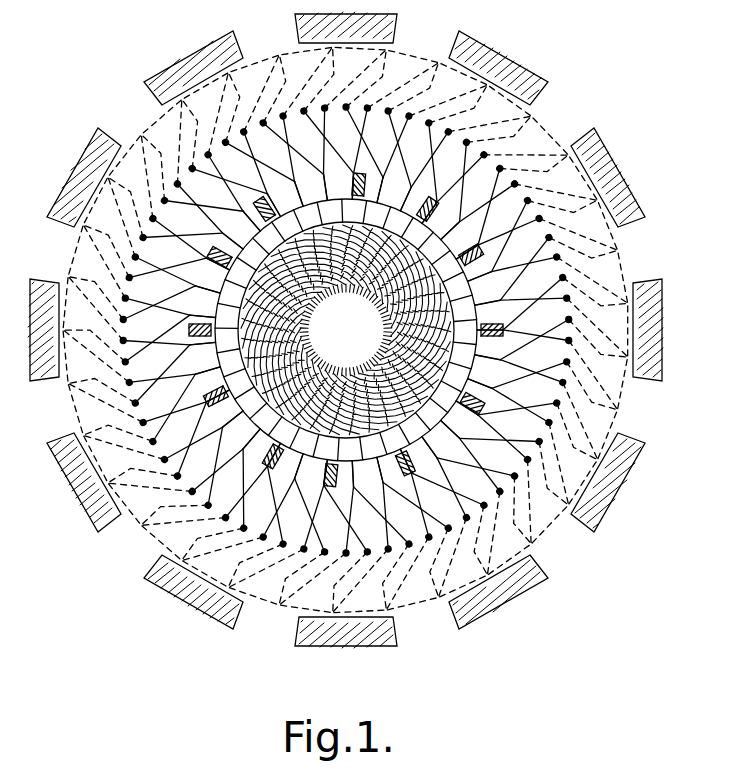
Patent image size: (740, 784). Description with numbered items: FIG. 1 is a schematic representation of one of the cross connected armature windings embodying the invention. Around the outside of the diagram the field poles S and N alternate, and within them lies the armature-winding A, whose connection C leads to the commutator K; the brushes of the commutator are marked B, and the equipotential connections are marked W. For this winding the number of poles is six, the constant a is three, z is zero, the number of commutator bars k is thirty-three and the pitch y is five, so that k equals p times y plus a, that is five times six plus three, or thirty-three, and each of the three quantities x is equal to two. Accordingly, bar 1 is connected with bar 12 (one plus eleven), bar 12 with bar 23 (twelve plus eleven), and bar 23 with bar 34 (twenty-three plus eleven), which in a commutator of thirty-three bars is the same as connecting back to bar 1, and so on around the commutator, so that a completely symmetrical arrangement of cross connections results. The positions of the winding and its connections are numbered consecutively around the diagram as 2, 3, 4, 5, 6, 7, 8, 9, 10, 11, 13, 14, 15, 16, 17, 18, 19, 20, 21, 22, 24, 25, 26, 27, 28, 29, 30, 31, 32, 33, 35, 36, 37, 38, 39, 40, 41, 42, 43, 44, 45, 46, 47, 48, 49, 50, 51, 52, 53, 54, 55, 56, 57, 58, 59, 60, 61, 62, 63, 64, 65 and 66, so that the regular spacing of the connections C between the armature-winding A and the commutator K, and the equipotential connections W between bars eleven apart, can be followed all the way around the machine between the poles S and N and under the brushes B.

The commutator bar 1 is at (141, 310).
The winding terminal 2 is at (144, 275).
The winding terminal 3 is at (149, 272).
The winding terminal 4 is at (158, 238).
The winding terminal 5 is at (164, 235).
The winding terminal 6 is at (179, 205).
The winding terminal 7 is at (185, 203).
The winding terminal 8 is at (206, 175).
The winding terminal 9 is at (212, 175).
The winding terminal 10 is at (238, 151).
The winding terminal 11 is at (243, 152).
The commutator bar 12 is at (273, 134).
The winding terminal 13 is at (279, 136).
The winding terminal 14 is at (312, 124).
The winding terminal 15 is at (317, 126).
The winding terminal 16 is at (351, 121).
The winding terminal 17 is at (356, 125).
The winding terminal 18 is at (388, 126).
The winding terminal 19 is at (395, 131).
The winding terminal 20 is at (428, 138).
The winding terminal 21 is at (432, 143).
The winding terminal 22 is at (463, 157).
The commutator bar 23 is at (465, 163).
The winding terminal 24 is at (493, 183).
The winding terminal 25 is at (494, 188).
The winding terminal 26 is at (519, 213).
The winding terminal 27 is at (519, 219).
The winding terminal 28 is at (538, 248).
The winding terminal 29 is at (537, 254).
The winding terminal 30 is at (550, 286).
The winding terminal 31 is at (547, 291).
The winding terminal 32 is at (554, 325).
The winding terminal 33 is at (550, 330).
The commutator bar 34 is at (551, 364).
The winding terminal 35 is at (547, 369).
The winding terminal 36 is at (541, 403).
The winding terminal 37 is at (537, 406).
The winding terminal 38 is at (524, 439).
The winding terminal 39 is at (518, 440).
The winding terminal 40 is at (500, 470).
The winding terminal 41 is at (494, 472).
The winding terminal 42 is at (471, 497).
The winding terminal 43 is at (464, 498).
The winding terminal 44 is at (437, 517).
The winding terminal 45 is at (431, 516).
The winding terminal 46 is at (399, 532).
The winding terminal 47 is at (394, 529).
The winding terminal 48 is at (360, 538).
The winding terminal 49 is at (355, 535).
The winding terminal 50 is at (321, 536).
The winding terminal 51 is at (316, 533).
The winding terminal 52 is at (282, 528).
The winding terminal 53 is at (279, 524).
The winding terminal 54 is at (245, 513).
The winding terminal 55 is at (243, 507).
The winding terminal 56 is at (212, 491).
The winding terminal 57 is at (211, 484).
The winding terminal 58 is at (185, 462).
The winding terminal 59 is at (184, 457).
The winding terminal 60 is at (163, 429).
The winding terminal 61 is at (163, 424).
The winding terminal 62 is at (147, 392).
The winding terminal 63 is at (149, 387).
The winding terminal 64 is at (139, 354).
The winding terminal 65 is at (142, 349).
The winding terminal 66 is at (138, 315).
The armature-winding A is at (354, 328).
The brushes B is at (332, 322).
The connection to the commutator C is at (338, 339).
The commutator K is at (355, 321).
The equipotential connections W is at (346, 330).
The pole N is at (346, 329).
The pole S is at (345, 330).